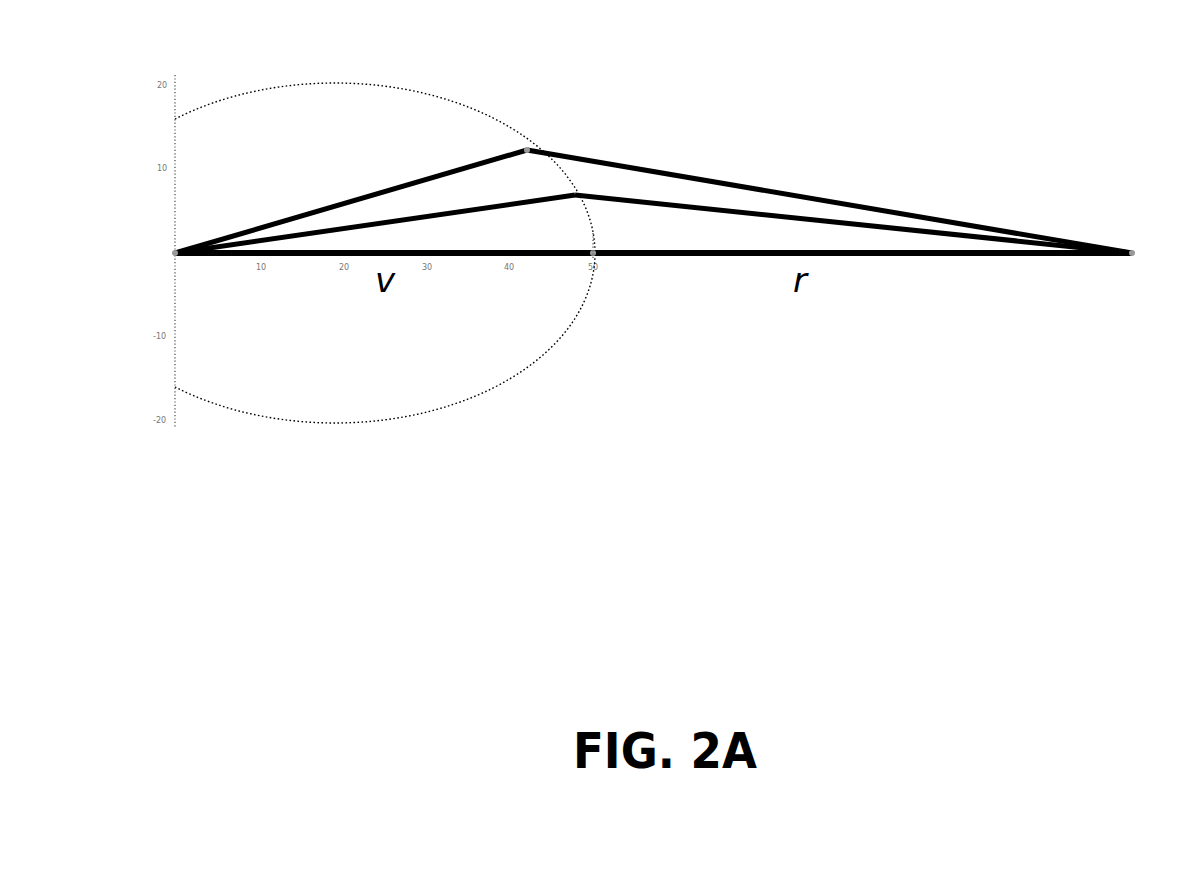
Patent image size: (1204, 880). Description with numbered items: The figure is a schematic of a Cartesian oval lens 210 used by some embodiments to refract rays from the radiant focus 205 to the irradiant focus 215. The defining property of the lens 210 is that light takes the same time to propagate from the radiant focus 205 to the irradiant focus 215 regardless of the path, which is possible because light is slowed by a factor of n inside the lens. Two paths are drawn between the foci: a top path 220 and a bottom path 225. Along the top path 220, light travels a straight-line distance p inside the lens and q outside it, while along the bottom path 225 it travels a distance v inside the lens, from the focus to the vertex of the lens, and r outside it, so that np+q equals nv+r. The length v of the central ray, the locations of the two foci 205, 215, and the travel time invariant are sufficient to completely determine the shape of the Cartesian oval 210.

The radiant focus F0 205 is at (175, 253).
The Cartesian oval lens 210 is at (399, 90).
The irradiant focus F1 215 is at (1138, 250).
The top path 220 is at (452, 172).
The bottom path 225 is at (636, 255).